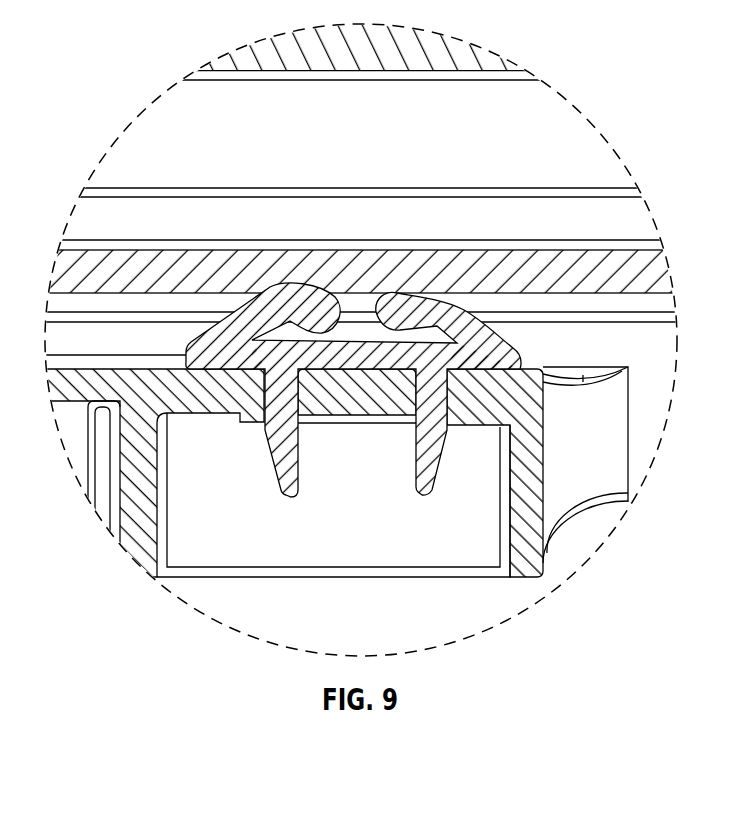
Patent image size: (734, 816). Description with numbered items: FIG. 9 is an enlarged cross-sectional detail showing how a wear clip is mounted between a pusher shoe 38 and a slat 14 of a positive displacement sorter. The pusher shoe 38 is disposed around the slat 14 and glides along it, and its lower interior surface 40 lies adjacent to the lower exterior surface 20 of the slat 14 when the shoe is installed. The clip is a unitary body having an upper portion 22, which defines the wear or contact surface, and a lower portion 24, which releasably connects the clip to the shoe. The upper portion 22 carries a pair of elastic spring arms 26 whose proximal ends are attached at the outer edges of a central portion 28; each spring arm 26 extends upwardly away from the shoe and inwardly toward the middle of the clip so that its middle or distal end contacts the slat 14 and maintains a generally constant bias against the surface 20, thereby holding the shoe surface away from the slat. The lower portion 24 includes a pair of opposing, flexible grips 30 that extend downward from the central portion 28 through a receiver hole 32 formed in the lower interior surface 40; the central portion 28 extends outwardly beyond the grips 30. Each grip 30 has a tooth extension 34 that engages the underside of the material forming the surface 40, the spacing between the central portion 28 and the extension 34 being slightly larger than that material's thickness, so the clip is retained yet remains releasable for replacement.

The slat 14 is at (451, 152).
The lower exterior surface 20 is at (661, 299).
The upper portion 22 is at (527, 340).
The lower portion 24 is at (357, 361).
The spring arms 26 is at (293, 300).
The central portion 28 is at (373, 372).
The grips 30 is at (278, 482).
The receiver hole 32 is at (255, 380).
The tooth extension 34 is at (242, 415).
The pusher shoe 38 is at (523, 551).
The lower interior surface 40 is at (109, 358).